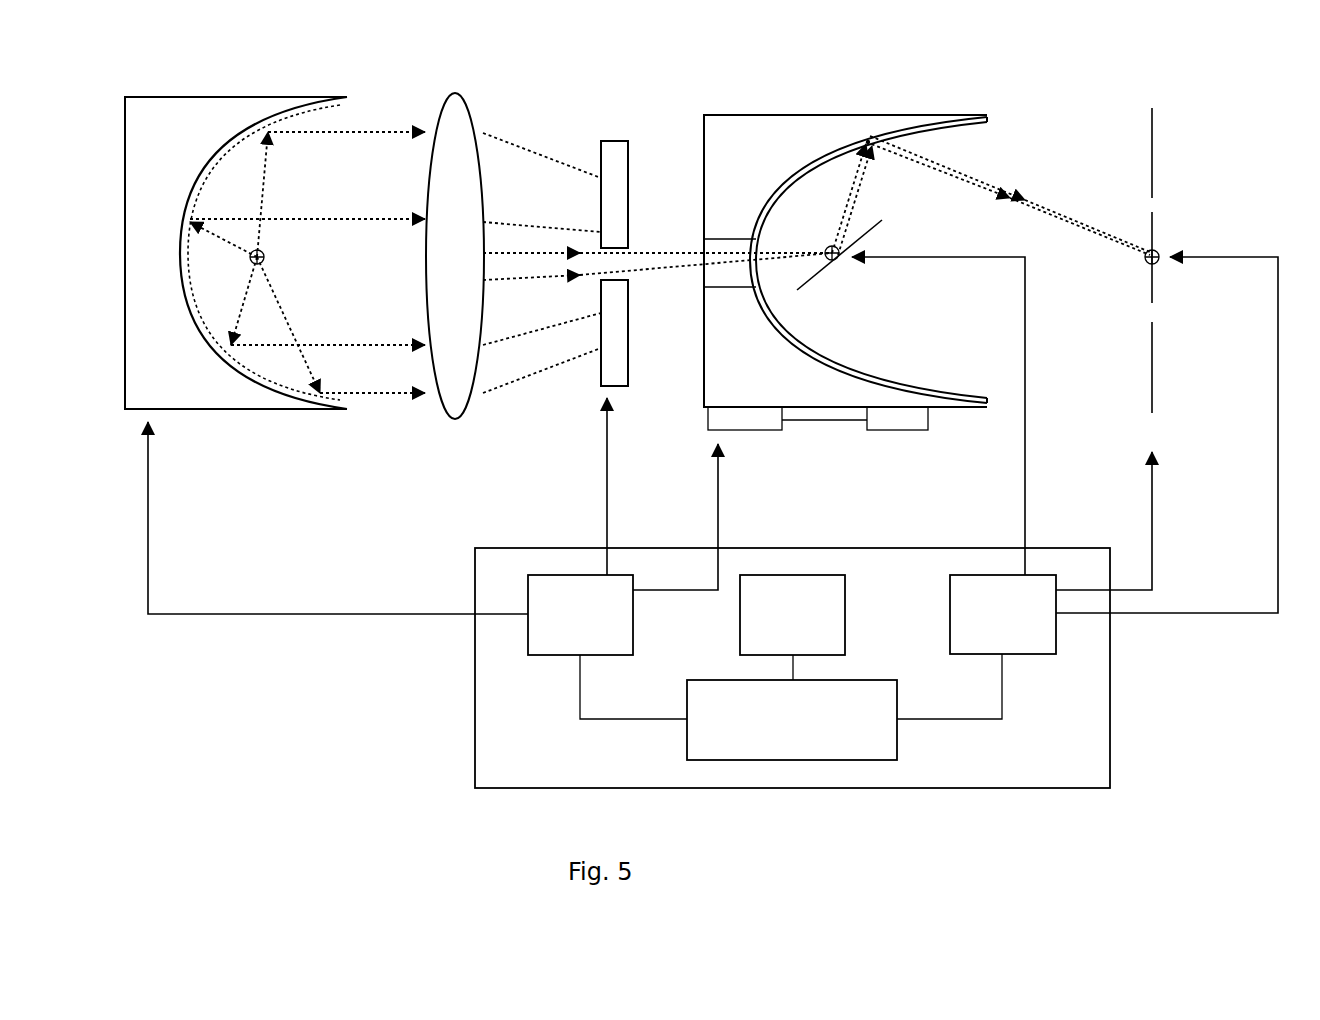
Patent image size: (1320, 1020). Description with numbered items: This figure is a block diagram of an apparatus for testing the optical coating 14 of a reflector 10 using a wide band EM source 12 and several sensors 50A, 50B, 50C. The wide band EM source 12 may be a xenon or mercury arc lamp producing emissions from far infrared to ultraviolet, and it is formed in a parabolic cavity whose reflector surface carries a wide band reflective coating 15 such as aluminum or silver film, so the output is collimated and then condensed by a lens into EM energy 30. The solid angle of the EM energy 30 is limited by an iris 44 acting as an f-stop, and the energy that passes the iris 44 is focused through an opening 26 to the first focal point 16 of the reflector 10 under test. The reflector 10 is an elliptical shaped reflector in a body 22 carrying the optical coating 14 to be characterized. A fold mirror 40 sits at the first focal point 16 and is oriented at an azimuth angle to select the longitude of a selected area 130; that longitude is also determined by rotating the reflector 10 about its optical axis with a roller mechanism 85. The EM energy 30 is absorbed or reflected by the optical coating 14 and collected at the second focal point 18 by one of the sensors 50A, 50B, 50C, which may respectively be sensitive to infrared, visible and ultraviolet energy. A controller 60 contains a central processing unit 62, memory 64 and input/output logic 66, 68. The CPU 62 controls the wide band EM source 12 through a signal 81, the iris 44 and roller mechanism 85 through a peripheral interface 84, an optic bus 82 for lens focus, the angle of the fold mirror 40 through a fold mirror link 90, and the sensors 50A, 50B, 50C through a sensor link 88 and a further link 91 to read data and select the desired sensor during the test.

The reflector 10 is at (1070, 124).
The wide band EM source 12 is at (355, 66).
The optical coating 14 is at (972, 124).
The wide band reflective coating 15 is at (348, 103).
The first focal point F1 16 is at (250, 260).
The second focal point 18 is at (1140, 264).
The body 22 is at (704, 187).
The opening 26 is at (704, 291).
The EM energy 30 is at (523, 131).
The fold mirror 40 is at (883, 236).
The iris 44 is at (618, 140).
The sensor 50A is at (1152, 130).
The sensor 50B is at (1152, 224).
The sensor 50C is at (1152, 336).
The controller 60 is at (1082, 777).
The central processing unit 62 is at (878, 752).
The memory 64 is at (806, 648).
The input/output logic 66 is at (562, 648).
The input/output logic 68 is at (1048, 648).
The signal 81 is at (338, 614).
The optic bus 82 is at (600, 460).
The peripheral interface 84 is at (712, 476).
The roller mechanism 85 is at (900, 432).
The sensor link 88 is at (1160, 613).
The fold mirror link 90 is at (1018, 452).
The control line to target stage 91 is at (1150, 472).
The selected area 130 is at (868, 140).